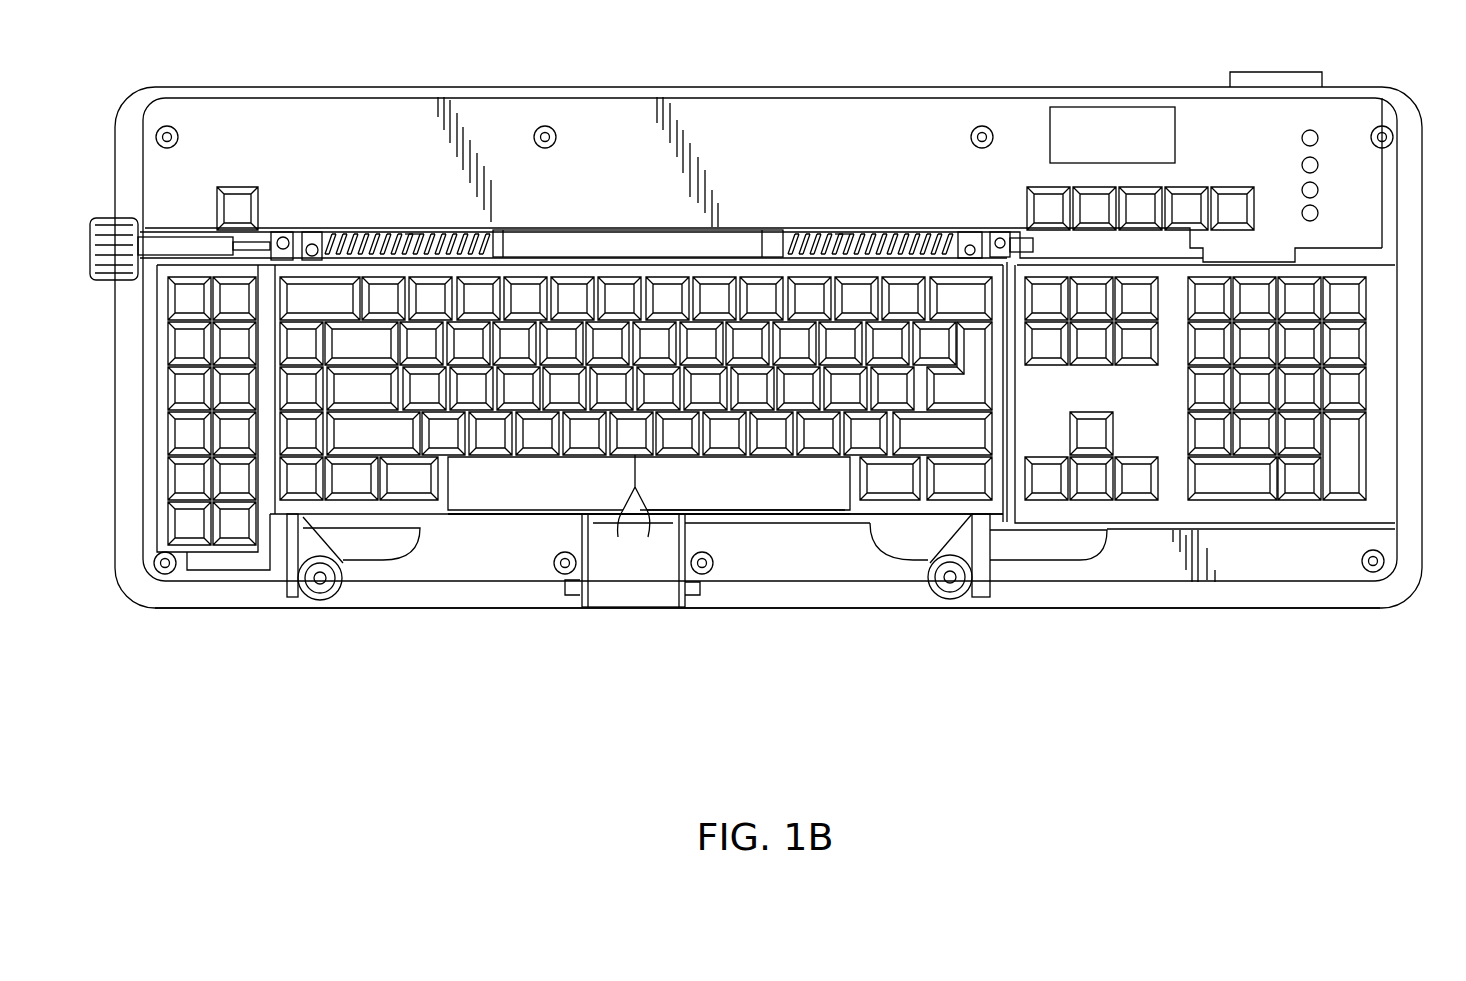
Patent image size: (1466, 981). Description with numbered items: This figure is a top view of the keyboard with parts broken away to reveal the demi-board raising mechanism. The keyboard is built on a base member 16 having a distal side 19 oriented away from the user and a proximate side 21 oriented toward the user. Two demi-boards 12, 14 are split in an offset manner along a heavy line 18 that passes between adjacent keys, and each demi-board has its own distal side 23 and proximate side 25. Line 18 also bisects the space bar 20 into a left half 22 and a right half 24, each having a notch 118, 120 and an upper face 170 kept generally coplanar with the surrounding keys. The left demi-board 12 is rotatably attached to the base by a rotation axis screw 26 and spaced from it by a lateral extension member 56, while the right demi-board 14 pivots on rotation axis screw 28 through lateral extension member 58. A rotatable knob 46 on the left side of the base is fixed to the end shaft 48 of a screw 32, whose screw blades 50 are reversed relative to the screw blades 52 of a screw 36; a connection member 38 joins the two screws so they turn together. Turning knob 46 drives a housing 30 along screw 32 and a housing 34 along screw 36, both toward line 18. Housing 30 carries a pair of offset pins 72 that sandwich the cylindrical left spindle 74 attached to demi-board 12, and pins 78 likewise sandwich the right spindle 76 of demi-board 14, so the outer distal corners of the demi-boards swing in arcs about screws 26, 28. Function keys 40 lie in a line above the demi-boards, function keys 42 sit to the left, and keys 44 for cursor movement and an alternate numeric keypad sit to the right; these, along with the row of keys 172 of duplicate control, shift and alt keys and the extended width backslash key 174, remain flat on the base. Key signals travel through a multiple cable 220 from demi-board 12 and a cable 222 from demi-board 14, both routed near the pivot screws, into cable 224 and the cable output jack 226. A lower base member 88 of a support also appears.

The base member 16 is at (985, 90).
The distal side 19 is at (558, 88).
The cable output jack 226 is at (1310, 88).
The proximate side 21 is at (537, 607).
The cable 224 is at (1277, 258).
The rotatable knob 46 is at (95, 220).
The end shaft 48 is at (266, 243).
The pins 72 is at (280, 237).
The left spindle 74 is at (299, 233).
The housing 30 is at (288, 234).
The screw 32 is at (383, 233).
The screw blades 50 is at (411, 233).
The connection member 38 is at (577, 245).
The screw 36 is at (885, 234).
The screw blades 52 is at (840, 234).
The housing 34 is at (965, 238).
The pins 78 is at (967, 247).
The right spindle 76 is at (995, 240).
The function keys 40 is at (1197, 185).
The function keys 42 is at (163, 446).
The extended width backslash key 174 is at (300, 301).
The row of keys 172 is at (262, 468).
The distal side 23 is at (507, 274).
The line 18 is at (632, 280).
The demi-board 12 is at (432, 503).
The demi-board 14 is at (858, 505).
The left half 22 is at (518, 493).
The right half 24 is at (733, 493).
The notch 118 is at (609, 510).
The notch 120 is at (658, 526).
The space bar 20 is at (712, 500).
The proximate side 25 is at (493, 514).
The upper face 170 is at (532, 505).
The keys 44 is at (1382, 341).
The lateral extension member 56 is at (283, 570).
The rotation axis screw 26 is at (320, 584).
The multiple cable 220 is at (388, 550).
The lower base member 88 is at (602, 593).
The lateral extension member 58 is at (993, 568).
The rotation axis screw 28 is at (950, 583).
The cable 222 is at (908, 547).